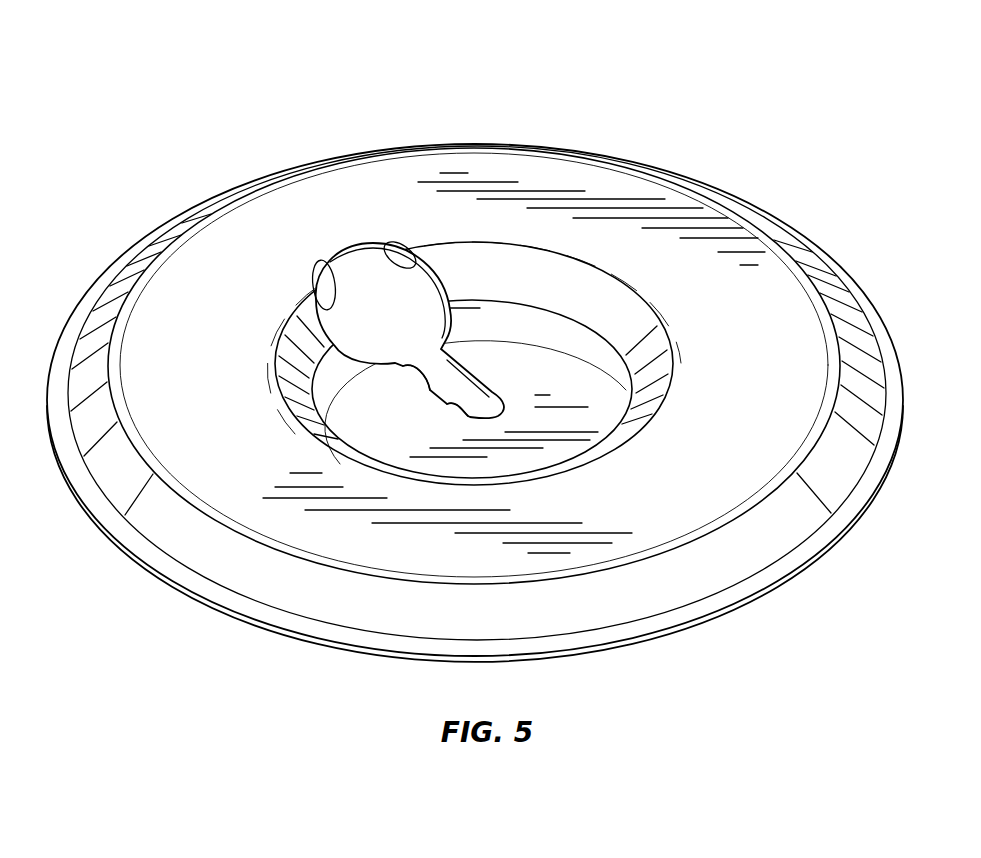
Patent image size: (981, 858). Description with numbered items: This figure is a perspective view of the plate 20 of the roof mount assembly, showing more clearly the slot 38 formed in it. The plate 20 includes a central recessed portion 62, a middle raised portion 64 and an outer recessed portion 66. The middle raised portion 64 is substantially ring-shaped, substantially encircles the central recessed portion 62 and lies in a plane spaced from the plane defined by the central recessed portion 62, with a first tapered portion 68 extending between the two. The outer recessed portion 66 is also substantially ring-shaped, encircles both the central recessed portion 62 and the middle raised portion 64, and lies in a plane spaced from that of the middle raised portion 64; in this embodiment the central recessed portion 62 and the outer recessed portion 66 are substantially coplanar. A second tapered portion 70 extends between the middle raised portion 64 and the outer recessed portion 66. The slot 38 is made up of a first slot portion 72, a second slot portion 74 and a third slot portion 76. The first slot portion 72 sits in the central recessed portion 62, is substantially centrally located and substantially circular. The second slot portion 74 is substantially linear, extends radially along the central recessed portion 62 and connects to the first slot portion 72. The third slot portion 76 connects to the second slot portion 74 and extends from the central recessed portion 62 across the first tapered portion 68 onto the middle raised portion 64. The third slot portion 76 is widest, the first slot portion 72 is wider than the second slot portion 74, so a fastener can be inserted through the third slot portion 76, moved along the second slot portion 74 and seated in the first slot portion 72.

The plate 20 is at (636, 102).
The slot 38 is at (379, 265).
The central recessed portion 62 is at (563, 348).
The middle raised portion 64 is at (733, 272).
The outer recessed portion 66 is at (823, 252).
The first tapered portion 68 is at (511, 274).
The second tapered portion 70 is at (750, 541).
The first slot portion 72 is at (450, 411).
The second slot portion 74 is at (406, 370).
The third slot portion 76 is at (331, 262).